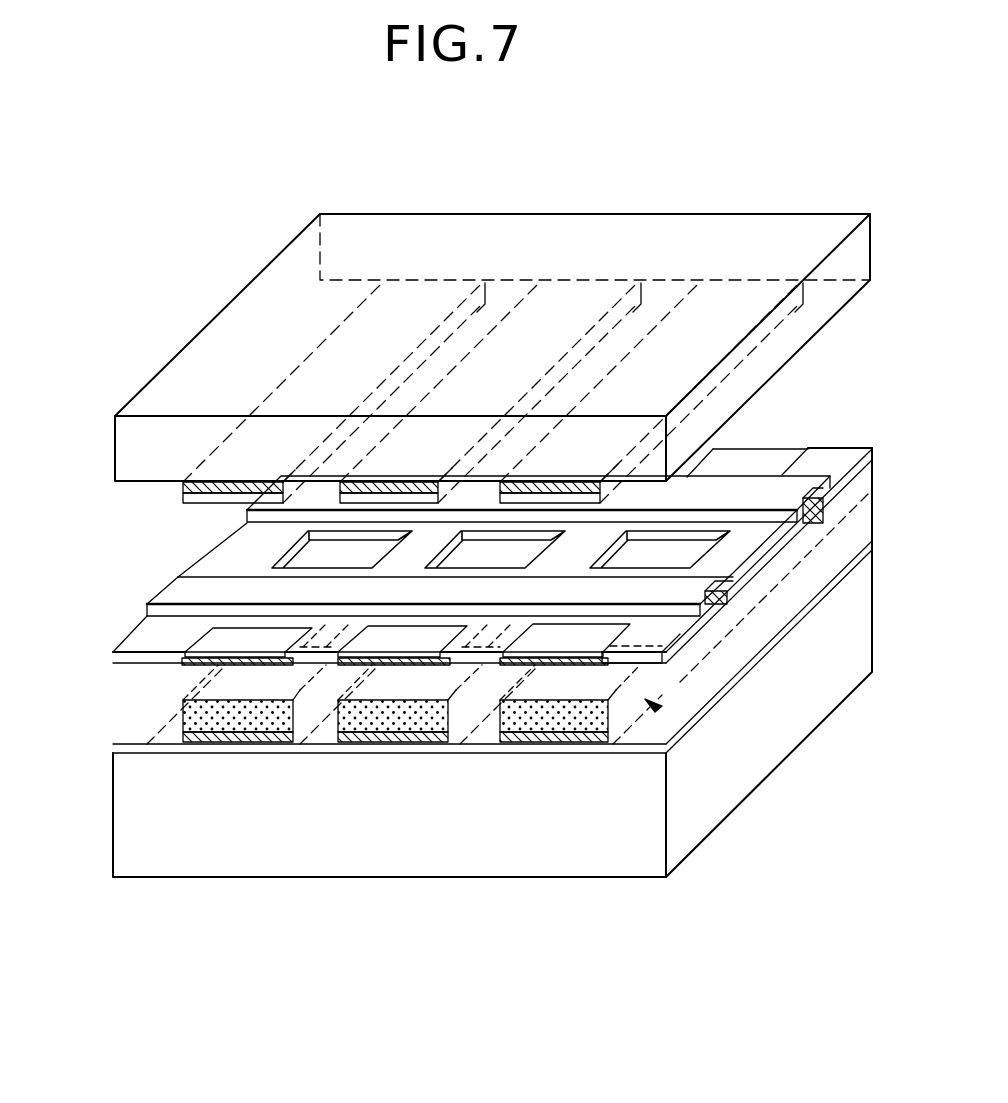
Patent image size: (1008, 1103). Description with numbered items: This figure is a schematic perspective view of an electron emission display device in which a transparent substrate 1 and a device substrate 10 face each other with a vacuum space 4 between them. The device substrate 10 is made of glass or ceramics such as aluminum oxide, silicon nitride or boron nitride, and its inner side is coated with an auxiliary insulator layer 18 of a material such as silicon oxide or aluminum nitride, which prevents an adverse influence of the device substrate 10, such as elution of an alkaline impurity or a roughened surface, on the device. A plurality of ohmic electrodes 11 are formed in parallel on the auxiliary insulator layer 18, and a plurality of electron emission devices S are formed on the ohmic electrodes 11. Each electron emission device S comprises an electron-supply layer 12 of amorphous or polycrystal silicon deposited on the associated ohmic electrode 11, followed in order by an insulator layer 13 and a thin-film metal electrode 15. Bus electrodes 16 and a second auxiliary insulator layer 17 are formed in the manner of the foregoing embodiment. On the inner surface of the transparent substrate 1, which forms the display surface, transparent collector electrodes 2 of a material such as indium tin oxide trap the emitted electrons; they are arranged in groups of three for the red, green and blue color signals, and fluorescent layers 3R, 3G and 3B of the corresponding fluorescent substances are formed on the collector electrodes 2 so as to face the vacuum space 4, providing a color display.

The transparent substrate 1 is at (288, 262).
The transparent collector electrodes 2 is at (182, 490).
The fluorescent layer (red) 3R is at (235, 495).
The fluorescent layer (green) 3G is at (405, 492).
The fluorescent layer (blue) 3B is at (562, 495).
The vacuum space 4 is at (850, 405).
The device substrate 10 is at (120, 842).
The ohmic electrodes 11 is at (207, 740).
The electron-supply layer 12 is at (527, 740).
The insulator layer 13 is at (113, 690).
The thin-film metal electrode 15 is at (215, 650).
The bus electrodes 16 is at (715, 600).
The second auxiliary insulator layer 17 is at (113, 652).
The auxiliary insulator layer 18 is at (113, 752).
The electron emission devices S is at (627, 655).